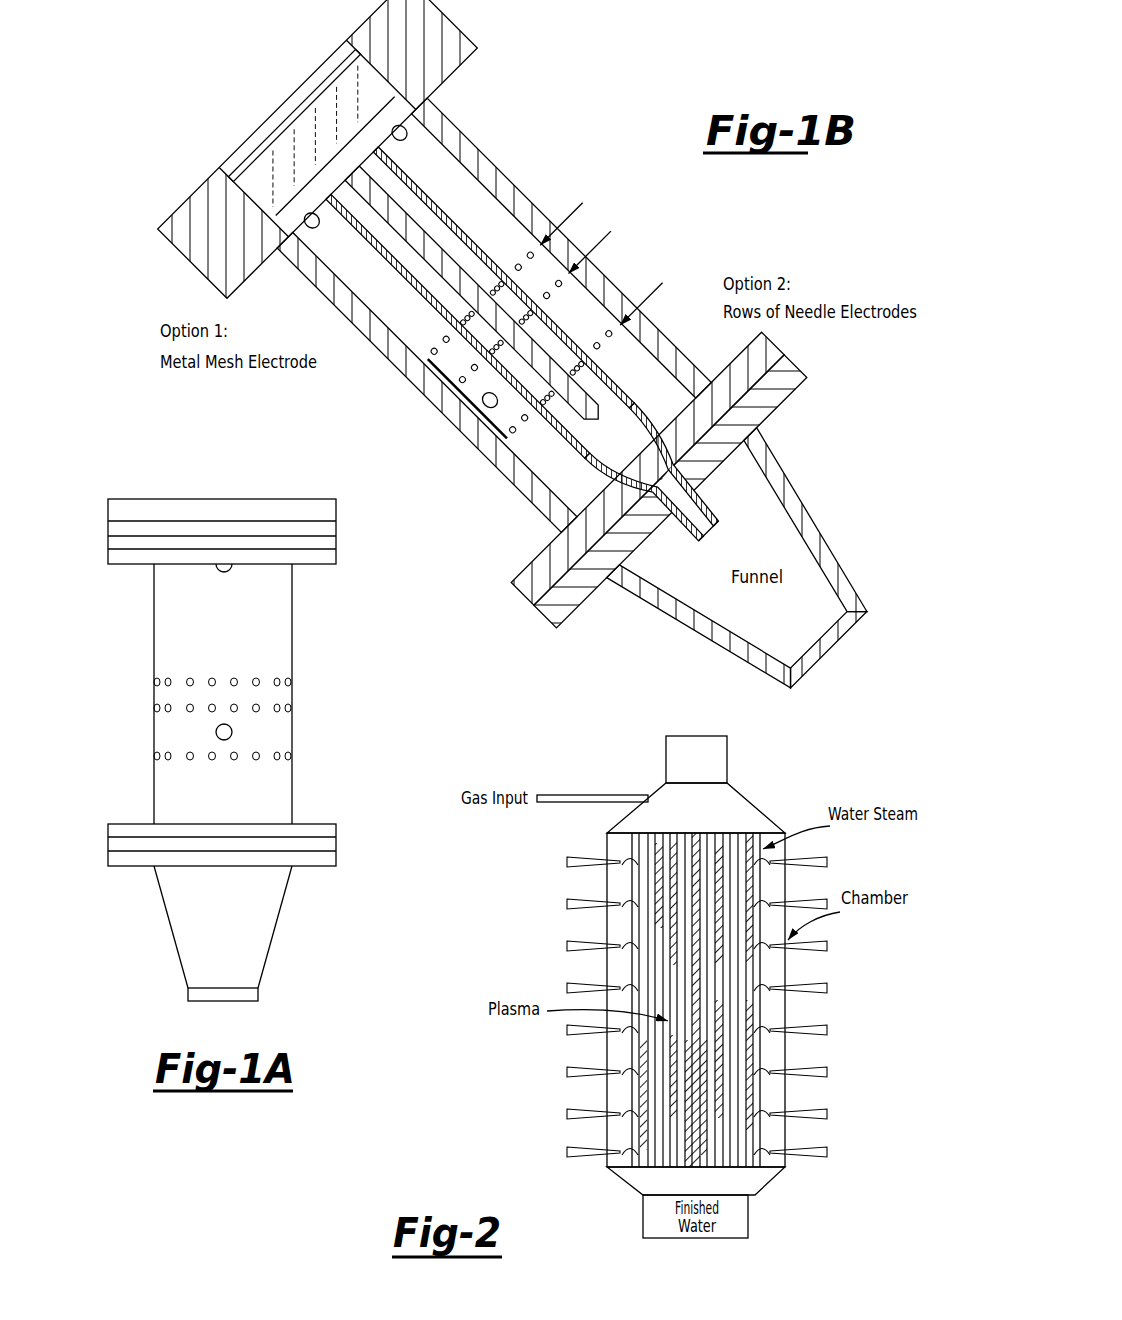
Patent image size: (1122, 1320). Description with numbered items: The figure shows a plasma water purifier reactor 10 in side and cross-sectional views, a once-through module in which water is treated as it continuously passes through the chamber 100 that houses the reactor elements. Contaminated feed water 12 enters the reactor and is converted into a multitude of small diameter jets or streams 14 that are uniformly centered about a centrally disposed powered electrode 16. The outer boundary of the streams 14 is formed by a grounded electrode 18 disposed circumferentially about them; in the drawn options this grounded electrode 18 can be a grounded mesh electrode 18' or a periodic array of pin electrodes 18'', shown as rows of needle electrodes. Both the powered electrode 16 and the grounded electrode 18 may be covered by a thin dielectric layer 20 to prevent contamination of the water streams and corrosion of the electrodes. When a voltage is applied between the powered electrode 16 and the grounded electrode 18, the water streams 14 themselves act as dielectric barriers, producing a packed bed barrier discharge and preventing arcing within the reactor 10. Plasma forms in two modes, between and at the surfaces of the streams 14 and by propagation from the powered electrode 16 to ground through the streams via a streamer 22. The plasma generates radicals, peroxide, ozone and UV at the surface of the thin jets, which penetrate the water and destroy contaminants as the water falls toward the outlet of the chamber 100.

In FIG. 1B, the plasma water purifier reactor 10 is at (580, 91).
In FIG. 1A, the plasma water purifier reactor 10 is at (80, 617).
In FIG. 2, the plasma water purifier reactor 10 is at (786, 810).
In FIG. 1B, the contaminated feed water 12 is at (268, 155).
In FIG. 2, the contaminated feed water 12 is at (666, 762).
In FIG. 1B, the streams 14 is at (372, 116).
In FIG. 2, the streams 14 is at (633, 845).
In FIG. 1B, the powered electrode 16 is at (368, 206).
In FIG. 2, the powered electrode 16 is at (698, 927).
In FIG. 1B, the grounded electrode 18 is at (596, 240).
In FIG. 1B, the grounded mesh electrode 18' is at (439, 398).
In FIG. 1B, the periodic array of pin electrodes 18'' is at (577, 342).
In FIG. 1B, the dielectric layer 20 is at (693, 497).
In FIG. 2, the streamer 22 is at (770, 1038).
In FIG. 1B, the chamber 100 is at (526, 498).
In FIG. 1A, the chamber 100 is at (152, 794).
In FIG. 2, the chamber 100 is at (607, 1061).